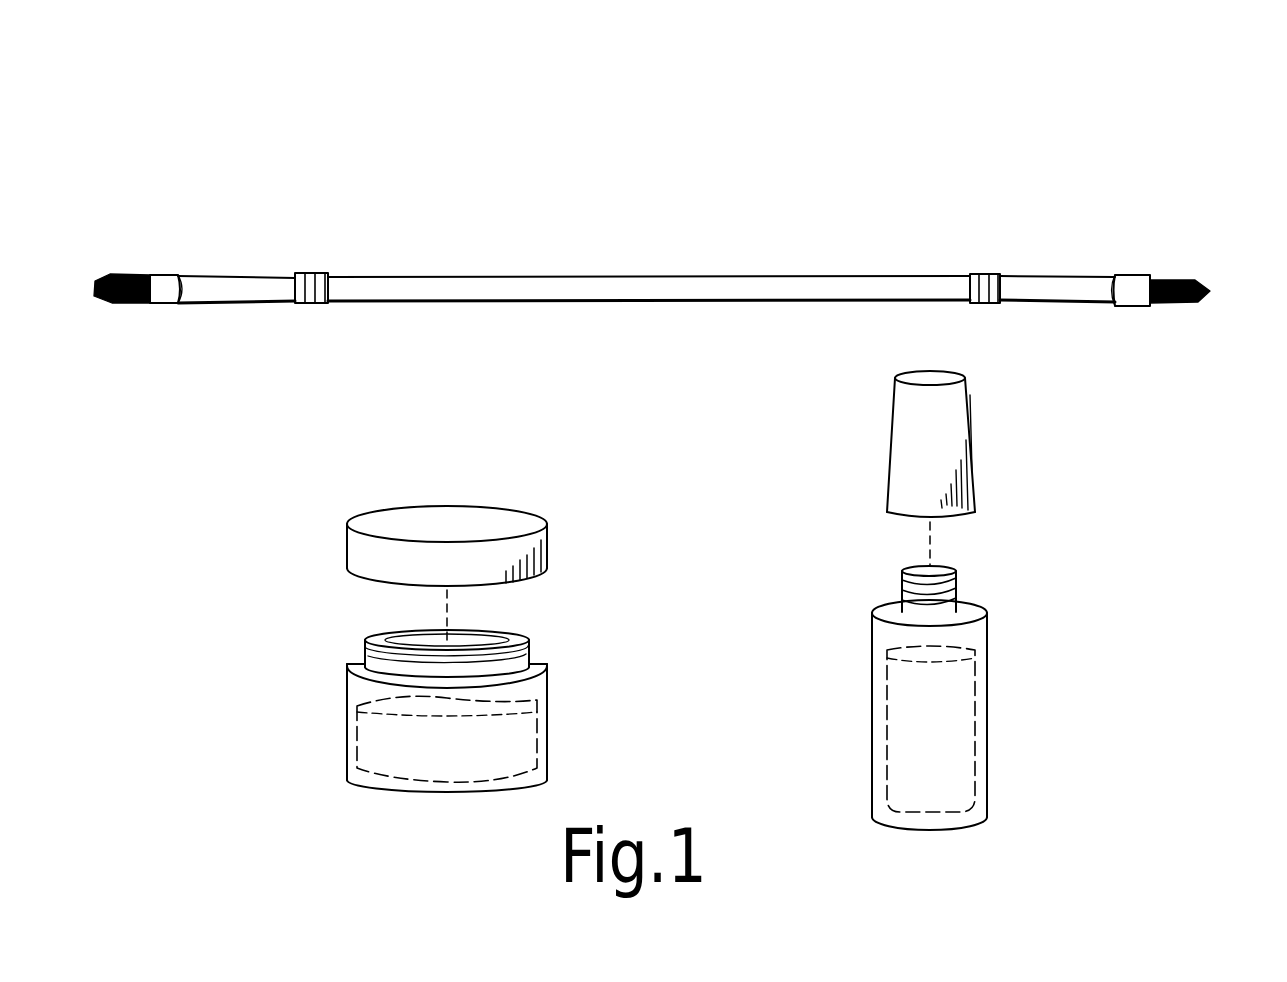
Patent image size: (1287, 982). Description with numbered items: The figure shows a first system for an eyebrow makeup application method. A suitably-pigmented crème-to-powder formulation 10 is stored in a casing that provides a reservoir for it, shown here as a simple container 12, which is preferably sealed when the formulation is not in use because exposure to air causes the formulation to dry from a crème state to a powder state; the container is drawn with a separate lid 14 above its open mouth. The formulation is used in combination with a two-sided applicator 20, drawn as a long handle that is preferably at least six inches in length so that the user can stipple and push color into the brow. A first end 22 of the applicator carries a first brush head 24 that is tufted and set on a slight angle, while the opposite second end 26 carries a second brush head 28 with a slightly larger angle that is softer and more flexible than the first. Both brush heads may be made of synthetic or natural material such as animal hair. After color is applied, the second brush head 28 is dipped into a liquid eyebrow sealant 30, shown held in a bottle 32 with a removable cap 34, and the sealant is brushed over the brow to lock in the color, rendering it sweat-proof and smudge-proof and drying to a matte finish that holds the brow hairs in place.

The crème-to-powder formulation 10 is at (445, 742).
The container 12 is at (347, 690).
The jar lid 14 is at (418, 525).
The two-sided applicator 20 is at (612, 198).
The first end 22 is at (280, 265).
The first brush head 24 is at (130, 277).
The second end 26 is at (1020, 267).
The second brush head 28 is at (1172, 280).
The liquid eyebrow sealant 30 is at (925, 713).
The bottle 32 is at (872, 763).
The bottle cap 34 is at (908, 439).